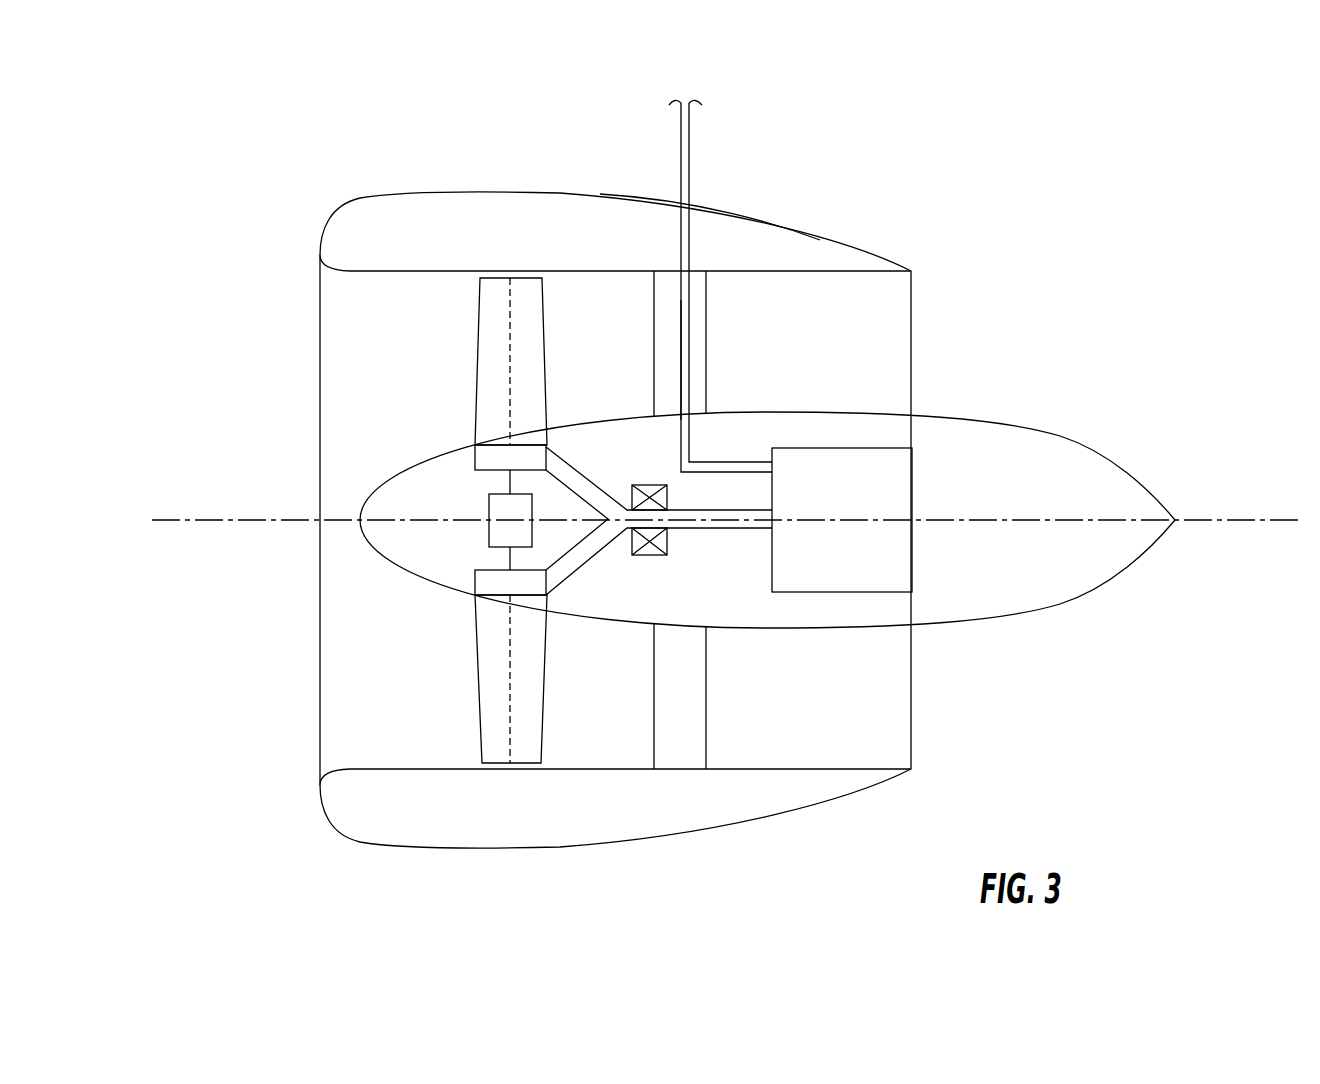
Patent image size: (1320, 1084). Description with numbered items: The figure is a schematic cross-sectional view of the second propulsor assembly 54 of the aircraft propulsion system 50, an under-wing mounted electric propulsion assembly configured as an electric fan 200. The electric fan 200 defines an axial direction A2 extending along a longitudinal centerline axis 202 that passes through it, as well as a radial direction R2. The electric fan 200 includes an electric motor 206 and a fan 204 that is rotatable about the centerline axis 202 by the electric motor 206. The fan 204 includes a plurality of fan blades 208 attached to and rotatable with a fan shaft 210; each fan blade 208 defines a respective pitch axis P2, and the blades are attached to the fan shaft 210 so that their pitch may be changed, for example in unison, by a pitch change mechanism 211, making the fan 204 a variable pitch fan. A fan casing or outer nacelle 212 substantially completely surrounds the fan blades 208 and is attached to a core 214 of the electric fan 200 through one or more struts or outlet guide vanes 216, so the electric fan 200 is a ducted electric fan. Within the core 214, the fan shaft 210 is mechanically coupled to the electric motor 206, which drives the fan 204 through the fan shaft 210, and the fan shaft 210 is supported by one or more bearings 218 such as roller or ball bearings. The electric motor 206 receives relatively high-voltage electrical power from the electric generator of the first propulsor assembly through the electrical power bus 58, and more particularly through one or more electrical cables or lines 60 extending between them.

The propulsion system 50 is at (980, 238).
The second propulsor assembly 54 is at (604, 168).
The electrical power bus 58 is at (740, 152).
The electrical cables or lines 60 is at (690, 372).
The electric fan 200 is at (385, 128).
The longitudinal centerline axis 202 is at (1230, 519).
The fan 204 is at (375, 355).
The electric motor 206 is at (912, 503).
The fan blades 208 is at (476, 418).
The fan shaft 210 is at (677, 535).
The pitch change mechanism 211 is at (488, 535).
The outer nacelle 212 is at (779, 224).
The core 214 is at (1008, 420).
The struts or outlet guide vanes 216 is at (706, 725).
The bearings 218 is at (650, 485).
The pitch axis P2 is at (513, 347).
The radial direction R2 is at (107, 352).
The axial direction A2 is at (795, 899).